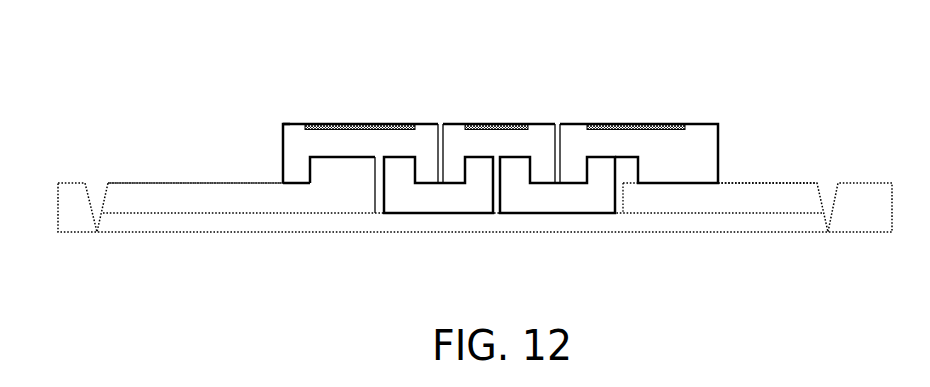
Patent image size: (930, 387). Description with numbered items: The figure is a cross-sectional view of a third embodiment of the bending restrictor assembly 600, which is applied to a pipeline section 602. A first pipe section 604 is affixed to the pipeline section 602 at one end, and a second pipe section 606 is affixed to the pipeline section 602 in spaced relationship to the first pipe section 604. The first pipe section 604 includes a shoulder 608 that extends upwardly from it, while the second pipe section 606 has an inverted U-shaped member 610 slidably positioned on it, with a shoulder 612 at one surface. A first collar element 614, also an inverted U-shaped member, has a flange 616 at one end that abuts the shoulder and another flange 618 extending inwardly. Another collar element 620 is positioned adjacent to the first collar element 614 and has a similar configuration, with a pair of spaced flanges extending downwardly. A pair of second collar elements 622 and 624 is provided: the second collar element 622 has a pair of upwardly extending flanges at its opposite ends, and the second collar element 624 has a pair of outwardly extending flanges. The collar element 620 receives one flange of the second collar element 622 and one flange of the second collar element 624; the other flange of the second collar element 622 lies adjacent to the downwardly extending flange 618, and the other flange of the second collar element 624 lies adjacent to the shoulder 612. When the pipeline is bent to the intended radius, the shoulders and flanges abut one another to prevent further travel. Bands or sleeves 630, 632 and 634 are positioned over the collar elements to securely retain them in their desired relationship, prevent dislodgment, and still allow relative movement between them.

The bending restrictor assembly 600 is at (727, 88).
The pipeline section 602 is at (243, 223).
The first pipe section 604 is at (195, 187).
The second pipe section 606 is at (758, 195).
The shoulder 608 is at (313, 170).
The inverted U-shaped member 610 is at (707, 152).
The shoulder 612 is at (578, 172).
The first collar element 614 is at (428, 126).
The flange 616 is at (292, 153).
The flange 618 is at (418, 168).
The collar element 620 is at (542, 132).
The second collar element 622 is at (440, 205).
The second collar element 624 is at (562, 205).
The band or sleeve 630 is at (358, 122).
The band or sleeve 632 is at (495, 122).
The band or sleeve 634 is at (635, 122).